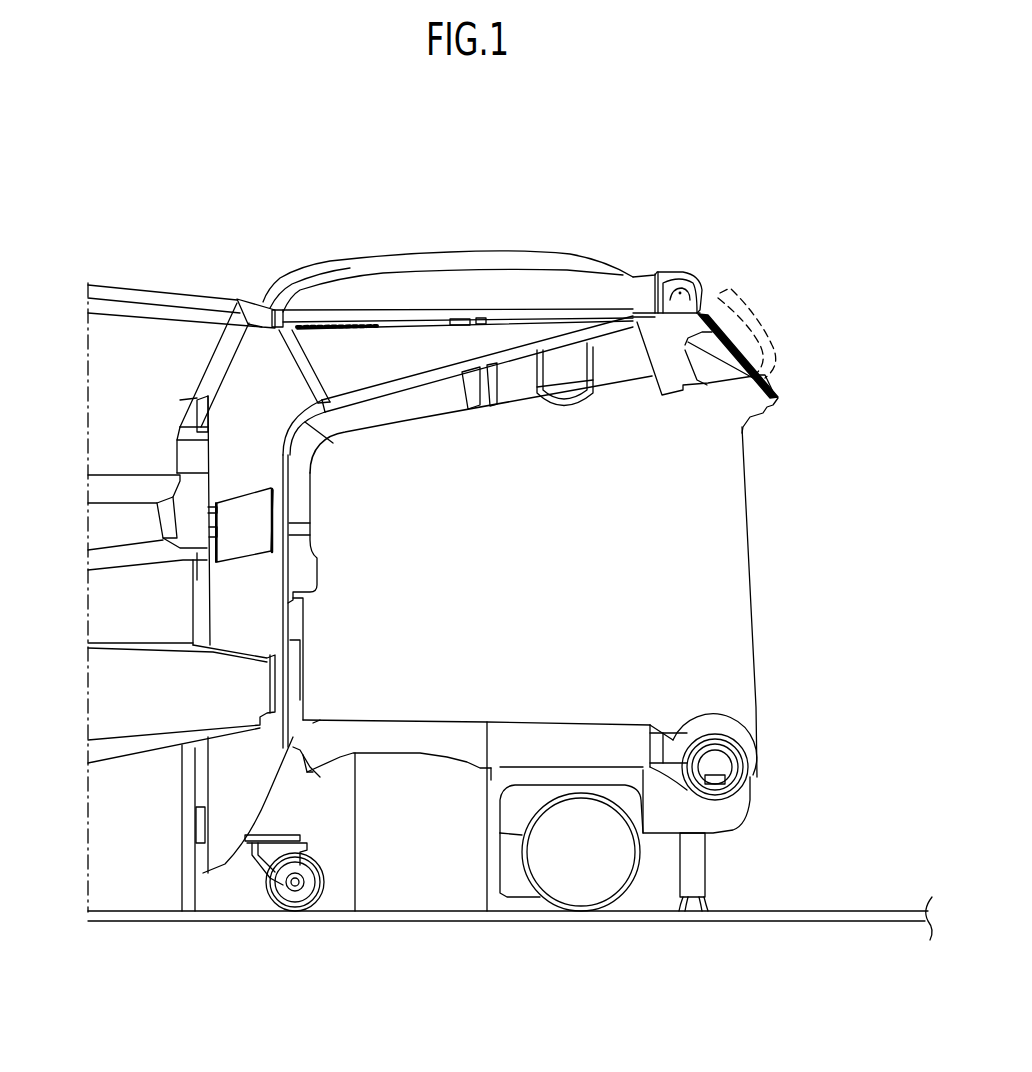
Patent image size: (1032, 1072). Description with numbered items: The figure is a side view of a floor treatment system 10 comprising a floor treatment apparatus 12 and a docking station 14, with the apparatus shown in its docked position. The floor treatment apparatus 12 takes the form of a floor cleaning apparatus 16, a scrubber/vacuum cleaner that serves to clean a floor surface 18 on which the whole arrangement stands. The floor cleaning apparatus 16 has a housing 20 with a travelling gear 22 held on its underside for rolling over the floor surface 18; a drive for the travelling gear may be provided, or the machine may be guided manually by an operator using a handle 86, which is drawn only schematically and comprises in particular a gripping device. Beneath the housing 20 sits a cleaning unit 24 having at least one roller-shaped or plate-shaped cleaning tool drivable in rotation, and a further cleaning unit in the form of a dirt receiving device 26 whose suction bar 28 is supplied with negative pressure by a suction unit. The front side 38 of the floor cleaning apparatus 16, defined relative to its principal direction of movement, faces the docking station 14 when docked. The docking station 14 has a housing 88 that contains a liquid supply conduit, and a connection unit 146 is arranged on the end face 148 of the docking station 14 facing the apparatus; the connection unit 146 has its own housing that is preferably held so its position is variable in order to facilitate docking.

The floor treatment system 10 is at (582, 186).
The floor treatment apparatus 12 is at (835, 457).
The docking station 14 is at (134, 258).
The floor cleaning apparatus 16 is at (812, 530).
The floor surface 18 is at (873, 911).
The housing 20 is at (738, 615).
The travelling gear 22 is at (580, 888).
The cleaning unit 24 is at (415, 880).
The dirt receiving device 26 is at (725, 886).
The suction bar 28 is at (700, 857).
The front side 38 is at (200, 411).
The handle 86 is at (740, 307).
The housing 88 is at (112, 368).
The connection unit 146 is at (200, 455).
The end face 148 is at (177, 430).